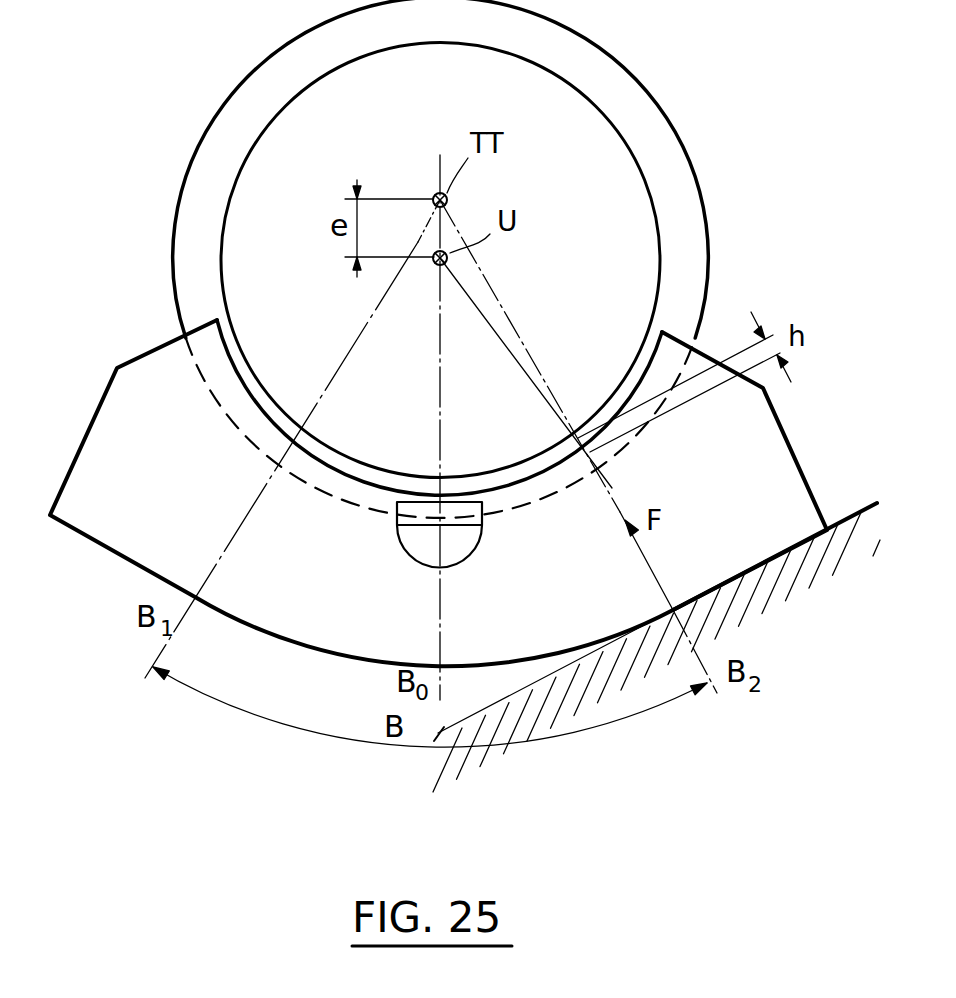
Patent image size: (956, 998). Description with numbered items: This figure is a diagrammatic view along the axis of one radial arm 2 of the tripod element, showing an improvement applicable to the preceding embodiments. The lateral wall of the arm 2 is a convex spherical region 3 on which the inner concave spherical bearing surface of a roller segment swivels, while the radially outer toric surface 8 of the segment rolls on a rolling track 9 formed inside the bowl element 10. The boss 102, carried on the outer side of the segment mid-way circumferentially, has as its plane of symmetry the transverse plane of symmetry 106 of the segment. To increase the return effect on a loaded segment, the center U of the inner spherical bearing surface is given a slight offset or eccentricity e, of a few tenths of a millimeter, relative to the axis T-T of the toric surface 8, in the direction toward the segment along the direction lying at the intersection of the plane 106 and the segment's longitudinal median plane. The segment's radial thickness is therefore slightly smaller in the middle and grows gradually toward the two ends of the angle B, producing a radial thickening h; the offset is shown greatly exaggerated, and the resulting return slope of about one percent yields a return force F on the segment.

The radial arm 2 is at (706, 153).
The convex spherical region 3 is at (620, 99).
The toric surface 8 is at (320, 653).
The rolling track 9 is at (500, 700).
The bowl element 10 is at (762, 568).
The boss 102 is at (481, 545).
The transverse plane of symmetry 106 is at (444, 374).